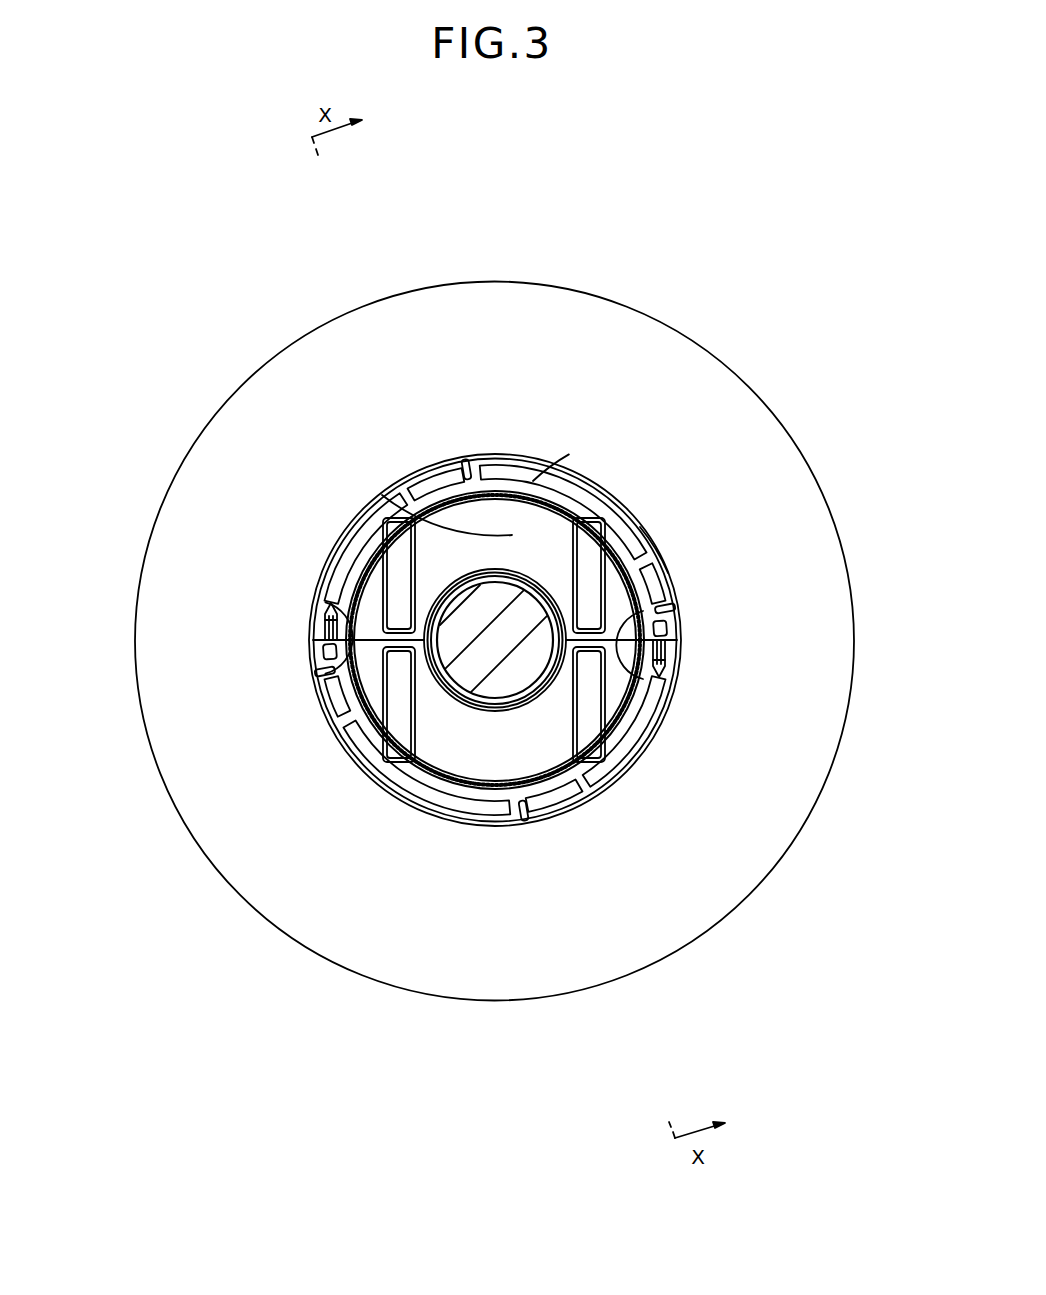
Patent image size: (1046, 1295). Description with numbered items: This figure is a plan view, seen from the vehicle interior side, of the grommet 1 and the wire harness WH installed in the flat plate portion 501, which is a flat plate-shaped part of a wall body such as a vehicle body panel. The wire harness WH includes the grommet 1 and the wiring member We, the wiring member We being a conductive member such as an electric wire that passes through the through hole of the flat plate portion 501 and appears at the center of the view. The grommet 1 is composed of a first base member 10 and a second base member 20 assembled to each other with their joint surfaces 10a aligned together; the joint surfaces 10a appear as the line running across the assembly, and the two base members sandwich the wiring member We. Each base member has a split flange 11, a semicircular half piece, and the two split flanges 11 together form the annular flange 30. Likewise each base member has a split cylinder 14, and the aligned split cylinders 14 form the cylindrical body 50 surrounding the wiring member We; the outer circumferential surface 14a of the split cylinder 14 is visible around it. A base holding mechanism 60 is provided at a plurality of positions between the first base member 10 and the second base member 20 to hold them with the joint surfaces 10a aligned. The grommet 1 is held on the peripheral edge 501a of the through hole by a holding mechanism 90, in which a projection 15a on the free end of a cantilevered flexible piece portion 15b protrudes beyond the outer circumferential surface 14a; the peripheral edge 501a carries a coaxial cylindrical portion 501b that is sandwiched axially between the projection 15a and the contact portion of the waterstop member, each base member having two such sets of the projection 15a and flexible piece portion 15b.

The grommet 1 is at (382, 478).
The wire harness WH is at (497, 658).
The first base member 10 is at (386, 814).
The joint surface 10a is at (690, 657).
The split flange 11 is at (530, 540).
The flange 30 is at (497, 648).
The split cylinder 14 is at (513, 458).
The cylindrical body 50 is at (495, 661).
The outer circumferential surface 14a is at (466, 457).
The projection 15a is at (452, 472).
The flexible piece portion 15b is at (455, 466).
The holding mechanism 90 is at (501, 628).
The second base member 20 is at (607, 480).
The base holding mechanism 60 is at (298, 622).
The flat plate portion 501 is at (342, 302).
The peripheral edge 501a is at (628, 500).
The cylindrical portion 501b is at (647, 547).
The wiring member We is at (457, 613).